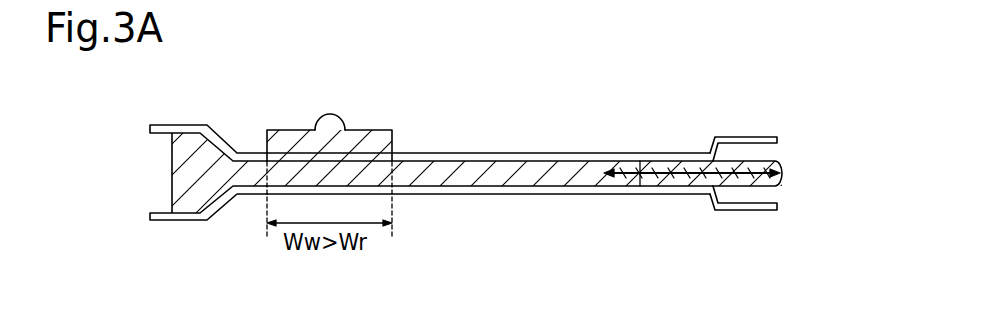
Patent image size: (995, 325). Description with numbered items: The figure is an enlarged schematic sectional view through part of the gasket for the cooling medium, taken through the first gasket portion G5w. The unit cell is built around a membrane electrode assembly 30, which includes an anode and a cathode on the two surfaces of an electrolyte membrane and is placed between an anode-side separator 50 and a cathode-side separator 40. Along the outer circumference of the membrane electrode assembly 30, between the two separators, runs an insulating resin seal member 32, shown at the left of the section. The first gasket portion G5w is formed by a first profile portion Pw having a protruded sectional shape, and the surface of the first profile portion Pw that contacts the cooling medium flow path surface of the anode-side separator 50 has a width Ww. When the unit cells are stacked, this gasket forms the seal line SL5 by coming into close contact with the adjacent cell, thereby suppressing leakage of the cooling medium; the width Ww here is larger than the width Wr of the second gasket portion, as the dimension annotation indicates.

The resin seal member 32 is at (175, 183).
The membrane electrode assembly 30 is at (783, 173).
The cathode-side separator 40 is at (777, 207).
The anode-side separator 50 is at (777, 142).
The first profile portion Pw is at (280, 130).
The seal line SL5 is at (330, 130).
The first gasket portion G5w is at (364, 157).